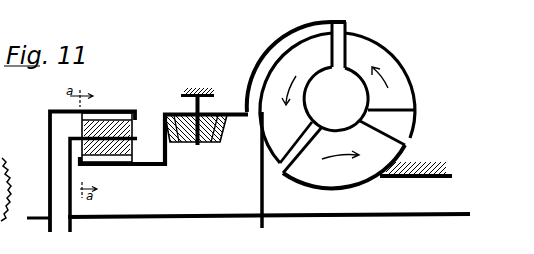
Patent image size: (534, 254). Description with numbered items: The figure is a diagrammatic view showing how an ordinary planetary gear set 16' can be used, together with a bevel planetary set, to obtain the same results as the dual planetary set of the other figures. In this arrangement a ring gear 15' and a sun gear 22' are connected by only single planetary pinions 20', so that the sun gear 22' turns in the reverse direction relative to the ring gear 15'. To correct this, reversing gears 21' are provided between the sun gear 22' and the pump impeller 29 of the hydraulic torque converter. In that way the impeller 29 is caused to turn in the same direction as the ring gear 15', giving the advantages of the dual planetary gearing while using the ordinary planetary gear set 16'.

The ring gear 15' is at (95, 154).
The ordinary planetary gear set 16' is at (128, 148).
The single planetary pinions 20' is at (66, 137).
The reversing gears 21' is at (196, 136).
The sun gear 22' is at (164, 159).
The pump impeller 29 is at (402, 62).